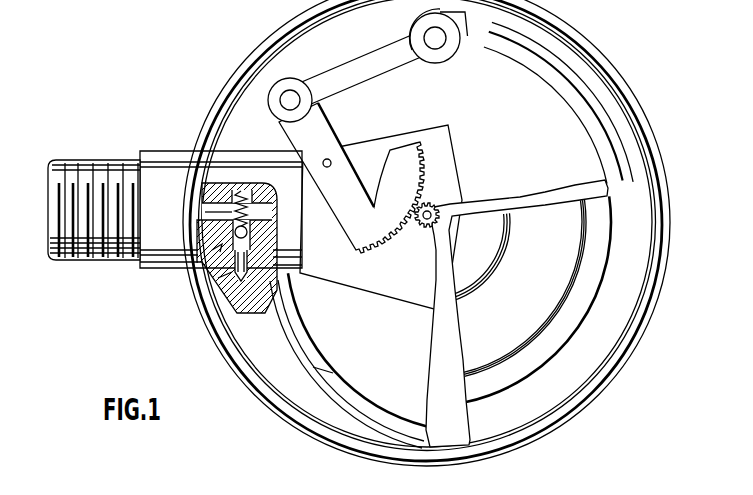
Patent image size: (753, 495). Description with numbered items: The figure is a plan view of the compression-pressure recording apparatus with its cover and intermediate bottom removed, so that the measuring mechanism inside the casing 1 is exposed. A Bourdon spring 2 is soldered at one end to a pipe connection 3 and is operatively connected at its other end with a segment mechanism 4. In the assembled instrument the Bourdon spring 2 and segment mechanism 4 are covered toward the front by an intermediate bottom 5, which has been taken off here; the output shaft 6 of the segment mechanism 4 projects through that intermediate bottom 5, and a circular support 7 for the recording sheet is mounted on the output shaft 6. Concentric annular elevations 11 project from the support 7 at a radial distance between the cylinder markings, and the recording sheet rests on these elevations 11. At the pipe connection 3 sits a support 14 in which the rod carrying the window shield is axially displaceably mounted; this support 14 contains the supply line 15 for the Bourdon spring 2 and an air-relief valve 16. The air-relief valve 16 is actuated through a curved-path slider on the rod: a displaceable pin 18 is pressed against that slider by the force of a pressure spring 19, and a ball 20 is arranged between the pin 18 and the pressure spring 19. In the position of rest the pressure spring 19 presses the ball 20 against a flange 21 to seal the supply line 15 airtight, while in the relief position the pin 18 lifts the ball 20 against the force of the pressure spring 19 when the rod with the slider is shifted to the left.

The casing 1 is at (583, 400).
The Bourdon spring 2 is at (600, 118).
The pipe connection 3 is at (168, 162).
The segment mechanism 4 is at (337, 148).
The intermediate bottom 5 is at (612, 350).
The output shaft 6 is at (442, 210).
The circular support 7 is at (512, 380).
The concentric annular elevations 11 is at (474, 364).
The support 14 is at (244, 310).
The supply line 15 is at (223, 212).
The air-relief valve 16 is at (198, 238).
The displaceable pin 18 is at (236, 292).
The pressure spring 19 is at (243, 190).
The ball 20 is at (217, 247).
The flange 21 is at (226, 280).